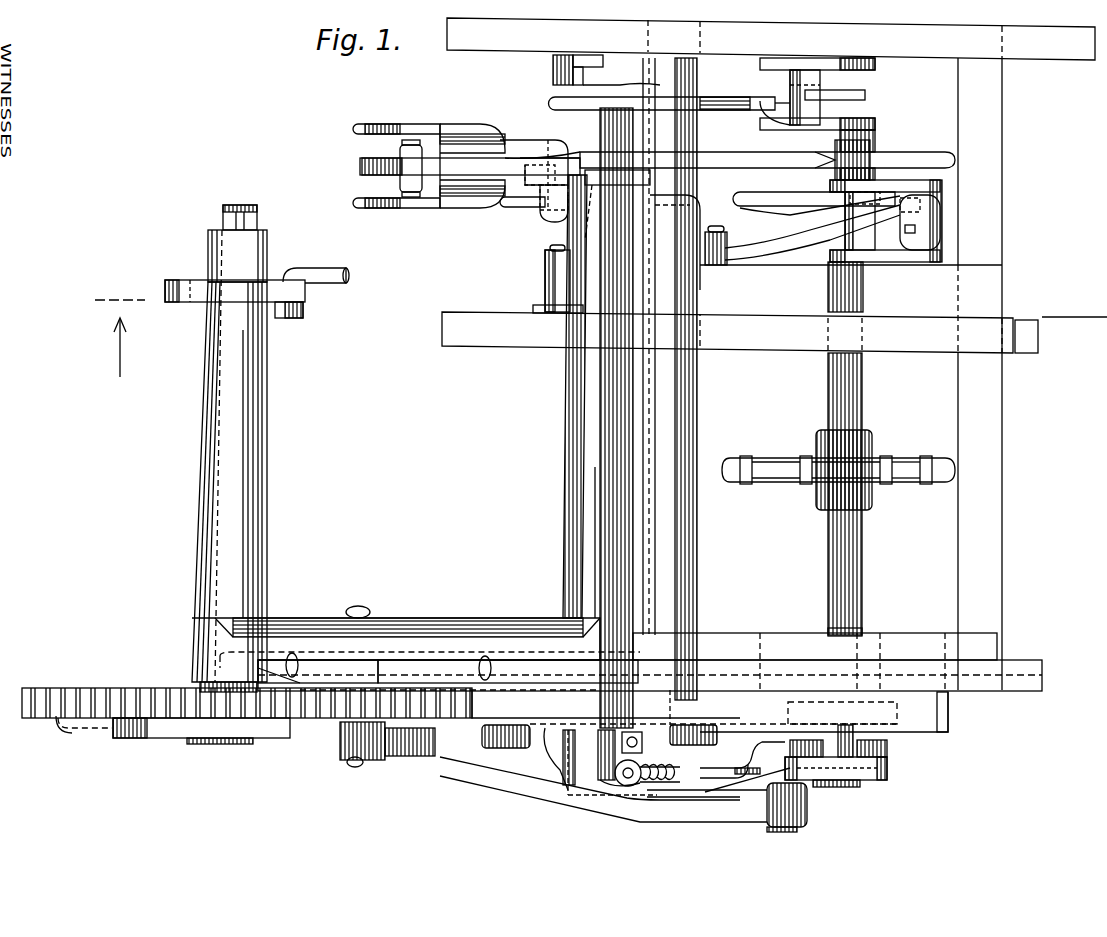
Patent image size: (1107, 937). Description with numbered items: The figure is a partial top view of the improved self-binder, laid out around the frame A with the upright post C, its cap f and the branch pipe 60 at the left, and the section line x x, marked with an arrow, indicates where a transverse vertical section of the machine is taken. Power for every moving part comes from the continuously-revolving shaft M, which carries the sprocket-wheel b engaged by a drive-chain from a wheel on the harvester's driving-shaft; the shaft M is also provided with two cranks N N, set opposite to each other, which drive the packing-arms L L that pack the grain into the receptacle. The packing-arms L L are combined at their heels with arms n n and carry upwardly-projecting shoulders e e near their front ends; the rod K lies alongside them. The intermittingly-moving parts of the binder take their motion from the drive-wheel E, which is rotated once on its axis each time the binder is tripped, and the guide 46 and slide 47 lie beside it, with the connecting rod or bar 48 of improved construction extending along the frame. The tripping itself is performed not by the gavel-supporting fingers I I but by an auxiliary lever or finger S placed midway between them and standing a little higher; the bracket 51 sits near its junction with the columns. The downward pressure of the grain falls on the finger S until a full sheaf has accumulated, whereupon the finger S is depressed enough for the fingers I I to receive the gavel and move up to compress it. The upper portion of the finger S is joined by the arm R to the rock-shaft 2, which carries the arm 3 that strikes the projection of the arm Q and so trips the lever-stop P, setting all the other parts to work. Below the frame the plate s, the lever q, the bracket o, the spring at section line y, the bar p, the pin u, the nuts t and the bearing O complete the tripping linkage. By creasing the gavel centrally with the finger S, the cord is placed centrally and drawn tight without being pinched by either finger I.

The frame A is at (682, 354).
The post C is at (280, 432).
The cap f is at (224, 220).
The pipe 60 is at (335, 282).
The section line x is at (108, 333).
The rock-shaft 2 is at (697, 607).
The fingers I is at (429, 165).
The auxiliary lever or finger S is at (459, 168).
The bracket 51 is at (534, 175).
The arm R is at (600, 235).
The packing-arms L is at (552, 101).
The arms n is at (722, 280).
The cranks N is at (830, 112).
The shoulders e is at (720, 120).
The rod K is at (740, 147).
The shaft M is at (845, 477).
The sprocket-wheel b is at (838, 470).
The drive-wheel E is at (247, 708).
The guide 46 is at (88, 736).
The slide 47 is at (312, 685).
The connecting rod or bar 48 is at (400, 672).
The plate s is at (710, 711).
The lever q is at (553, 772).
The bracket o is at (607, 742).
The arm 3 is at (642, 735).
The section line y is at (644, 772).
The arm Q is at (726, 760).
The bar p is at (727, 807).
The lever-stop P is at (747, 765).
The nut t is at (772, 762).
The bearing O is at (843, 772).
The pin u is at (845, 738).